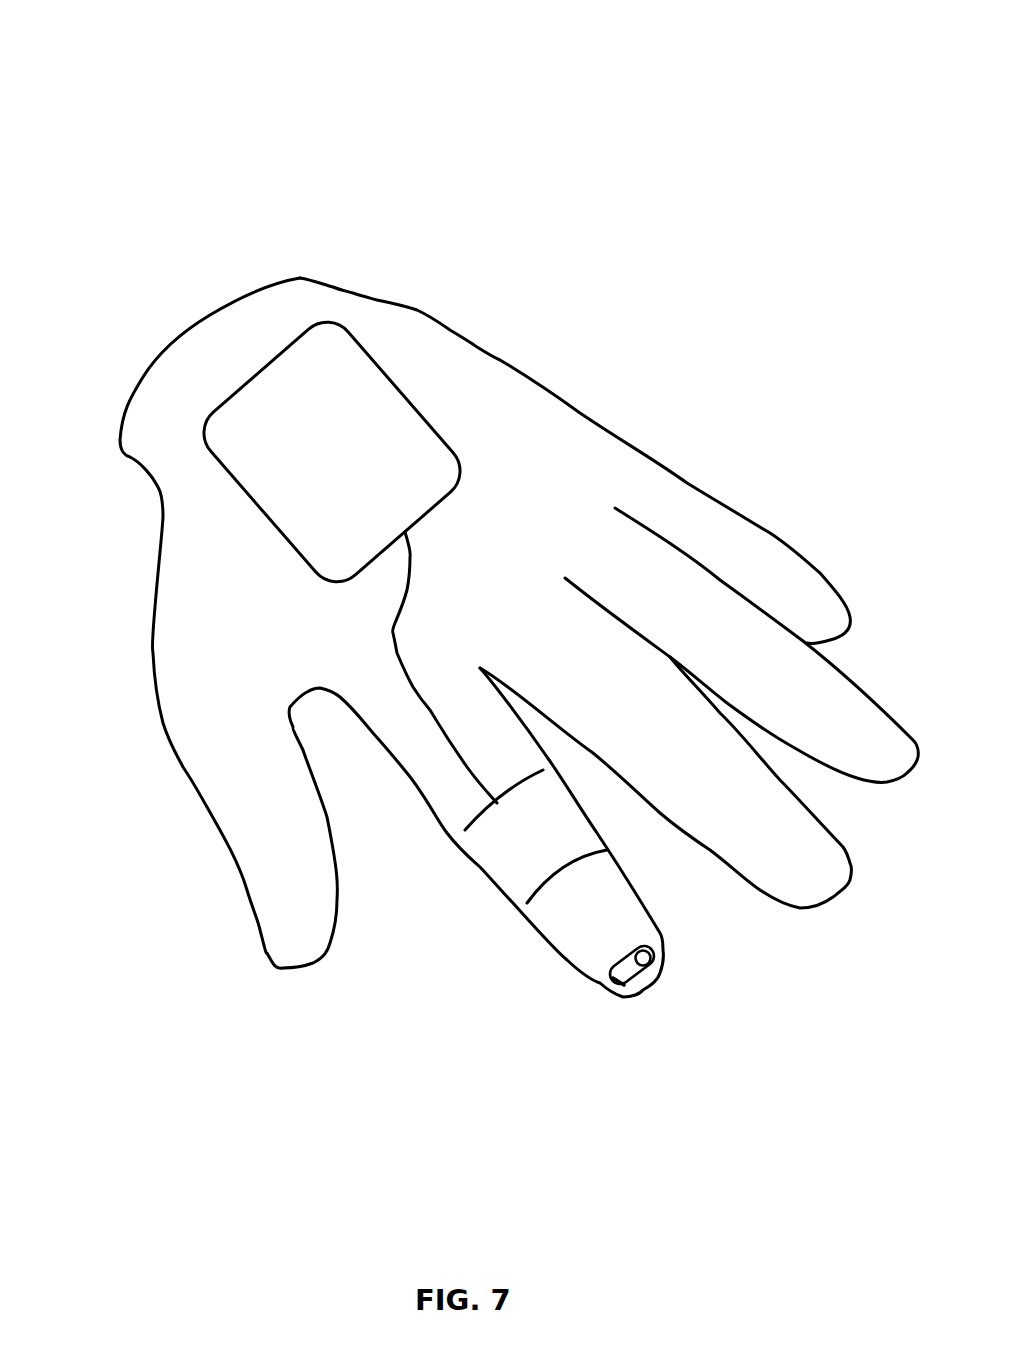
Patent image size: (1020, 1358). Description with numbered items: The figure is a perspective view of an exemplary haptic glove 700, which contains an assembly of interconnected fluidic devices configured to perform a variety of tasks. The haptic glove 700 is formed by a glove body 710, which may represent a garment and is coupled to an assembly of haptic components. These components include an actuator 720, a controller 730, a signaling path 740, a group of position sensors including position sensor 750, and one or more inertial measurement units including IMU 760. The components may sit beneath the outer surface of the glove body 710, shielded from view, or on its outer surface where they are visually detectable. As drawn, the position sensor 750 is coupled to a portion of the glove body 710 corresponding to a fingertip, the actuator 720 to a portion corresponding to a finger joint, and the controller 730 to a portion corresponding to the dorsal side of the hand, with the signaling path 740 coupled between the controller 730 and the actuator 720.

The haptic glove 700 is at (148, 56).
The glove body 710 is at (163, 502).
The actuator 720 is at (507, 860).
The controller 730 is at (318, 377).
The signaling path 740 is at (393, 633).
The position sensor 750 is at (652, 958).
The IMU 760 is at (617, 981).